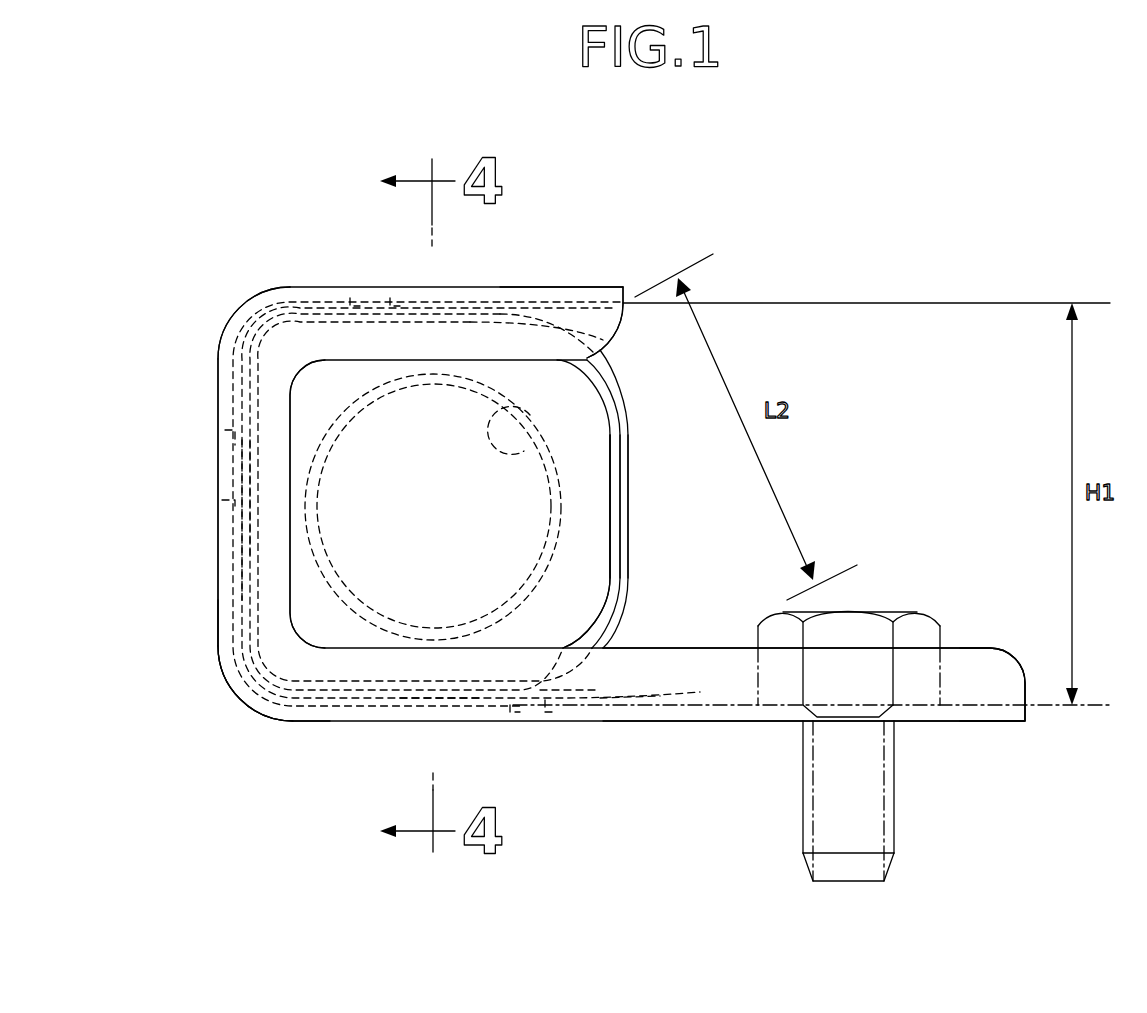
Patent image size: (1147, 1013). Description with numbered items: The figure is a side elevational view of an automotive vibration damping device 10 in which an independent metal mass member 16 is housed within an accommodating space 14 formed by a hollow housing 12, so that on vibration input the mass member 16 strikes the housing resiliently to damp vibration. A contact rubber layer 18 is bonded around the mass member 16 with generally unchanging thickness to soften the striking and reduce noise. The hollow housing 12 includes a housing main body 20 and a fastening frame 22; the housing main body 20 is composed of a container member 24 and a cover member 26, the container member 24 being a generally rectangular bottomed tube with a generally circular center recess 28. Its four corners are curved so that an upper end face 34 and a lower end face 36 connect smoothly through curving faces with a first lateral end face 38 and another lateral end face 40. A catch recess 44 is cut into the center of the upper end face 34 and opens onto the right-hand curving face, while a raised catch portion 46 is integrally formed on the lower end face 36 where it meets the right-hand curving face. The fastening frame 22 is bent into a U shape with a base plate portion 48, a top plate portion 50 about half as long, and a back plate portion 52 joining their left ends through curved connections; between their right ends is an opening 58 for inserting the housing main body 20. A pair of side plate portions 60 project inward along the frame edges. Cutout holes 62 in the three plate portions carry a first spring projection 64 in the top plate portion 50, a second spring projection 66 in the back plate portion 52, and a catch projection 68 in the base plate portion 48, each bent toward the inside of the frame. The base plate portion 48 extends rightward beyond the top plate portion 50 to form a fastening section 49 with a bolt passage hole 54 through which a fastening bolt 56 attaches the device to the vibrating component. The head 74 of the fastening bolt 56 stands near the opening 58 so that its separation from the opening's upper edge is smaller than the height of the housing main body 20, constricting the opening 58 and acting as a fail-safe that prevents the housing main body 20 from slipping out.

The automotive vibration damping device 10 is at (211, 270).
The hollow housing 12 is at (205, 675).
The accommodating space 14 is at (340, 620).
The mass member 16 is at (498, 485).
The contact rubber layer 18 is at (560, 521).
The housing main body 20 is at (722, 565).
The fastening frame 22 is at (696, 750).
The container member 24 is at (625, 577).
The cover member 26 is at (568, 600).
The center recess 28 is at (503, 407).
The upper end face 34 is at (376, 290).
The lower end face 36 is at (436, 710).
The first lateral end face 38 is at (228, 590).
The another lateral end face 40 is at (627, 490).
The catch recess 44 is at (480, 292).
The raised catch portion 46 is at (556, 722).
The base plate portion 48 is at (363, 722).
The fastening section 49 is at (960, 712).
The top plate portion 50 is at (572, 290).
The back plate portion 52 is at (228, 392).
The bolt passage hole 54 is at (810, 757).
The fastening bolt 56 is at (925, 807).
The opening 58 is at (640, 297).
The side plate portions 60 is at (288, 302).
The cutout holes 62 is at (222, 436).
The first spring projection 64 is at (437, 295).
The second spring projection 66 is at (232, 507).
The catch projection 68 is at (587, 722).
The head 74 is at (852, 638).